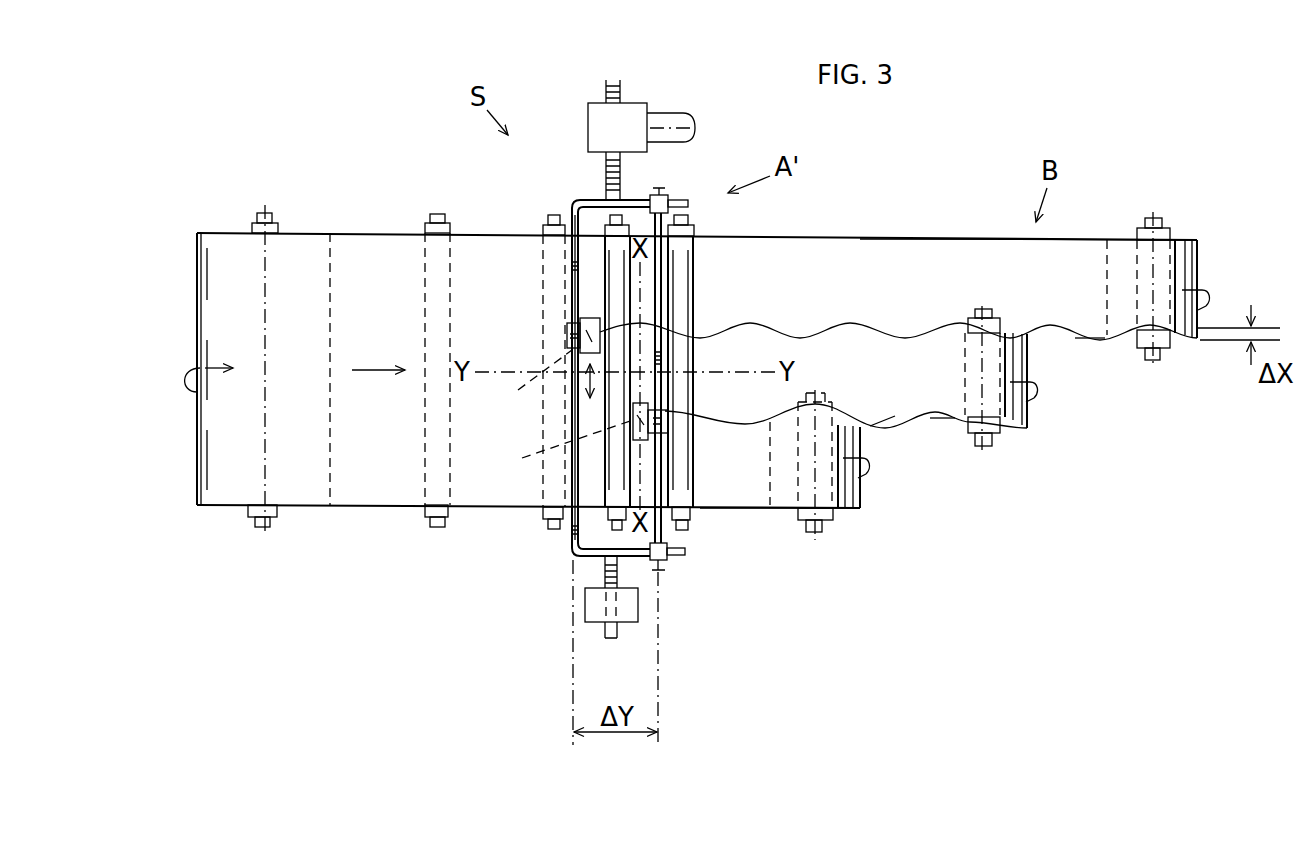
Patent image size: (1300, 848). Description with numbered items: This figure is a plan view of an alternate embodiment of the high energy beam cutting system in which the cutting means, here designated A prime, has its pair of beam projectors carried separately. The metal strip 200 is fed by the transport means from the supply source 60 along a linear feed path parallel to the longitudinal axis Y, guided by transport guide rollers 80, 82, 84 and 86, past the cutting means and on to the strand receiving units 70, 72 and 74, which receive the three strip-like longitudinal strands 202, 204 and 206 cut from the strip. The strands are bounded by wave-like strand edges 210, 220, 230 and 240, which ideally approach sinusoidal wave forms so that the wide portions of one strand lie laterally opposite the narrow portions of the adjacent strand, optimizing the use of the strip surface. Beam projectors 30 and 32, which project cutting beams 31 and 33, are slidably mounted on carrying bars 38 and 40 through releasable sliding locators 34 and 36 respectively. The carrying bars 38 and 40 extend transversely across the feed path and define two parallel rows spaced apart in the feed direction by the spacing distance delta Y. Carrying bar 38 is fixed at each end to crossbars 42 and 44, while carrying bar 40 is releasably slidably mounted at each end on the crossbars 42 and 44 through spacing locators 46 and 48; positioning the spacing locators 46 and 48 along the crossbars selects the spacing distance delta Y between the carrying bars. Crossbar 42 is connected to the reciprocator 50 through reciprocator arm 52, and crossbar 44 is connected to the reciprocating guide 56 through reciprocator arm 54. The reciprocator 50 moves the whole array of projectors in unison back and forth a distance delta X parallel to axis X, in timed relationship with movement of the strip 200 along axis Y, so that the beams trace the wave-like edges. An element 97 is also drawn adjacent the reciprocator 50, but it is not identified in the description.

The metal strip 200 is at (360, 238).
The strand 202 is at (928, 238).
The strand 204 is at (904, 396).
The strand 206 is at (752, 493).
The strand edge 210 is at (1089, 340).
The strand edge 220 is at (836, 326).
The strand edge 230 is at (942, 428).
The strand edge 240 is at (743, 424).
The beam projector 30 is at (567, 330).
The projected beam 31 is at (530, 377).
The beam projector 32 is at (640, 406).
The projected beam 33 is at (560, 446).
The releasable sliding locator 34 is at (580, 338).
The releasable sliding locator 36 is at (662, 432).
The carrying bar 38 is at (578, 248).
The carrying bar 40 is at (662, 262).
The crossbar 42 is at (576, 200).
The crossbar 44 is at (648, 556).
The spacing locator 46 is at (668, 199).
The spacing locator 48 is at (670, 559).
The reciprocator 50 is at (592, 128).
The reciprocator arm 52 is at (606, 170).
The reciprocator arm 54 is at (606, 568).
The reciprocating guide 56 is at (592, 611).
The supply source 60 is at (273, 521).
The strand receiving unit 70 is at (826, 521).
The strand receiving unit 72 is at (996, 434).
The strand receiving unit 74 is at (1166, 350).
The transport guide roller 80 is at (430, 521).
The transport guide roller 82 is at (548, 513).
The transport guide roller 84 is at (612, 513).
The transport guide roller 86 is at (694, 511).
The encoder 97 is at (680, 122).